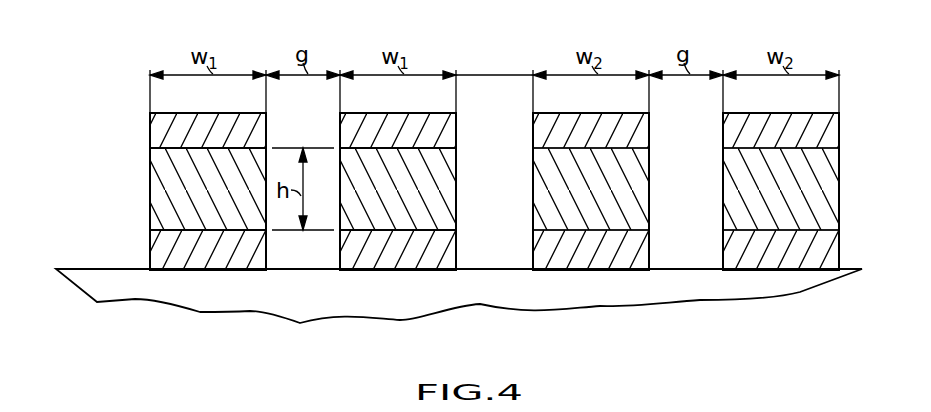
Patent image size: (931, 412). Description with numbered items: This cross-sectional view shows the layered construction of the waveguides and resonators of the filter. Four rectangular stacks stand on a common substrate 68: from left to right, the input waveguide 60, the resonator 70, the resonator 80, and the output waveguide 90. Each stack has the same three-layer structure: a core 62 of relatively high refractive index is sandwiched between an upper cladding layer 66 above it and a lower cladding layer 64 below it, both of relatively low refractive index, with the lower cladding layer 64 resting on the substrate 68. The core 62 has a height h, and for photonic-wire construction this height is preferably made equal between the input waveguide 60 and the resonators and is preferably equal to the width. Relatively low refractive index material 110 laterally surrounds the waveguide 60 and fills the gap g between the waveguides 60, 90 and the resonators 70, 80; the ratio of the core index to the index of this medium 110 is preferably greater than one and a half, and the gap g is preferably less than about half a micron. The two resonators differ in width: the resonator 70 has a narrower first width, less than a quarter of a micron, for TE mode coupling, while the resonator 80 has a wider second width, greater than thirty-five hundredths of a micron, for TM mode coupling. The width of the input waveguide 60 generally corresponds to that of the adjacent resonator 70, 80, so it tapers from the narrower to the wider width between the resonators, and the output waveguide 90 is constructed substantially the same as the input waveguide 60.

The input waveguide 60 is at (142, 118).
The core 62 is at (150, 181).
The lower cladding layer 64 is at (150, 244).
The upper cladding layer 66 is at (155, 138).
The substrate 68 is at (97, 298).
The resonator 70 is at (468, 150).
The resonator 80 is at (660, 140).
The output waveguide 90 is at (851, 134).
The low refractive index material 110 is at (47, 215).